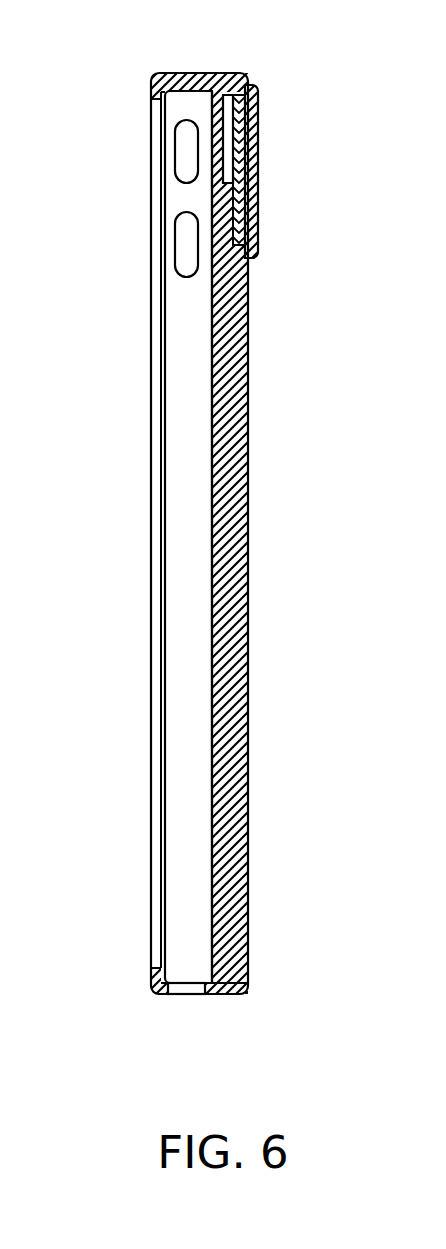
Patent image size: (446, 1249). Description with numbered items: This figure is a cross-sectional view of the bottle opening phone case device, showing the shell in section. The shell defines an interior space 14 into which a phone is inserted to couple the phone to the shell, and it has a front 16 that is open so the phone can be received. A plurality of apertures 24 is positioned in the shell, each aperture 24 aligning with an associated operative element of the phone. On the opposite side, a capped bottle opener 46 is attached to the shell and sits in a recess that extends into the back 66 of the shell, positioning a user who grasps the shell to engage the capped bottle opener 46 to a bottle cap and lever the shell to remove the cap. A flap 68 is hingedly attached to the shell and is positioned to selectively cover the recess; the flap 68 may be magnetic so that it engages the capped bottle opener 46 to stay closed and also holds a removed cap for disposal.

The interior space 14 is at (187, 393).
The front 16 is at (150, 525).
The apertures 24 is at (187, 250).
The capped bottle opener 46 is at (235, 160).
The back 66 is at (247, 473).
The flap 68 is at (235, 140).